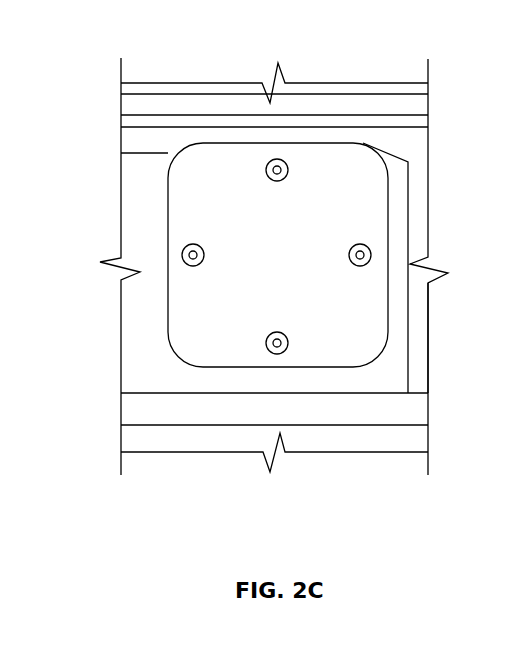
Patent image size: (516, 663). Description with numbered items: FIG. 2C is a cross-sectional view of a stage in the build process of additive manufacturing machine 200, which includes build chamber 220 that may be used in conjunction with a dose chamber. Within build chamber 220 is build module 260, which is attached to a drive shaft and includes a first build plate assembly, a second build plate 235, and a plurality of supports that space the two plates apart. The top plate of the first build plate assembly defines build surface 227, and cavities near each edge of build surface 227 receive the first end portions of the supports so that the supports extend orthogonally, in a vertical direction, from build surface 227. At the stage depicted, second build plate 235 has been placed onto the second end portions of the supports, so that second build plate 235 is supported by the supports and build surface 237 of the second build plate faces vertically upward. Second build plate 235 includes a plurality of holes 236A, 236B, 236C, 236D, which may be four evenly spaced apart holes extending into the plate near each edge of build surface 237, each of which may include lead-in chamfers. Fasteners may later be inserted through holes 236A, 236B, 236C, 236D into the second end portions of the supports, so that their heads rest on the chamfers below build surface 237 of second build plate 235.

The additive manufacturing machine 200 is at (390, 51).
The build chamber 220 is at (352, 386).
The build surface 227 is at (471, 338).
The second build plate 235 is at (411, 176).
The hole 236A is at (183, 253).
The hole 236B is at (273, 158).
The hole 236C is at (372, 252).
The hole 236D is at (276, 354).
The build surface 237 is at (182, 304).
The build module 260 is at (318, 404).